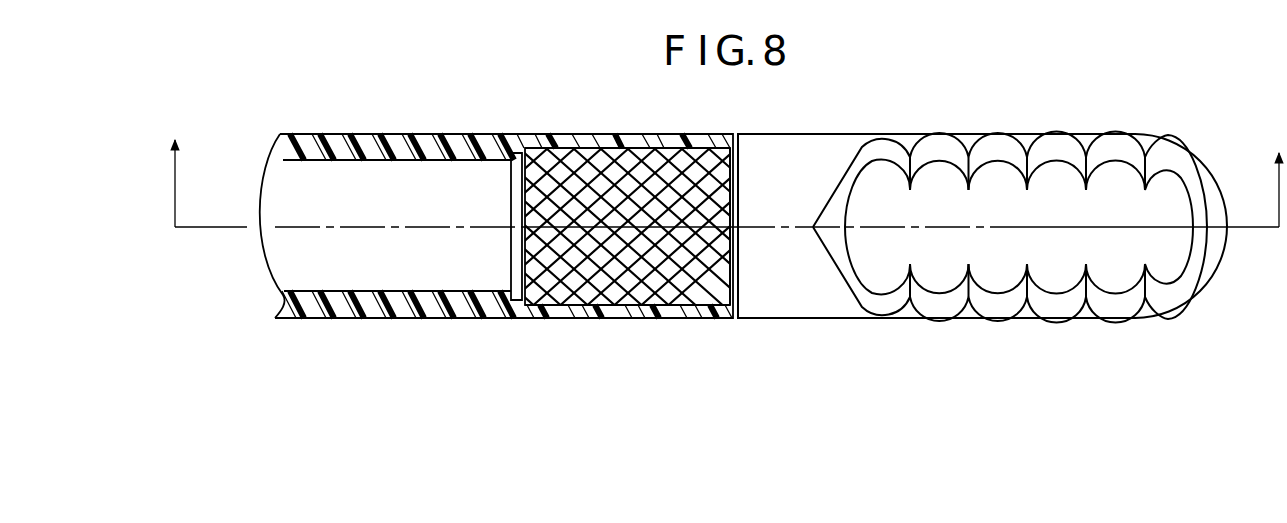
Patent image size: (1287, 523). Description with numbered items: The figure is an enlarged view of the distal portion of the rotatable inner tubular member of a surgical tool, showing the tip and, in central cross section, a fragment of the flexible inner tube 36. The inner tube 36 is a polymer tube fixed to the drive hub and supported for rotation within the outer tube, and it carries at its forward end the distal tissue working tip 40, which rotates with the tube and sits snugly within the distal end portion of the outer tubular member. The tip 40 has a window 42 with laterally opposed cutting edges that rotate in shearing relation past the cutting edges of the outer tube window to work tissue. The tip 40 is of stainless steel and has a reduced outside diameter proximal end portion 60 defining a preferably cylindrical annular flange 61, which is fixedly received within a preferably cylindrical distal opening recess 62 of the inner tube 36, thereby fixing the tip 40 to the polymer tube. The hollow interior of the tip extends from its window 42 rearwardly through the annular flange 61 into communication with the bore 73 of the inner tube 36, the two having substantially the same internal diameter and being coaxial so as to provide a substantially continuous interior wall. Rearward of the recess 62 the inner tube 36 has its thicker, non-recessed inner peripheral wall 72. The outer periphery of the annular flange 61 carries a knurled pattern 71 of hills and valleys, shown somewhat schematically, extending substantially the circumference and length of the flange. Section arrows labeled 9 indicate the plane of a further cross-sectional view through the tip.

The section line for FIG. 9 is at (708, 183).
The inner tube 36 is at (413, 128).
The distal tissue working tip 40 is at (791, 128).
The window 42 is at (990, 171).
The proximal end portion 60 is at (568, 322).
The annular flange 61 is at (625, 282).
The distal opening recess 62 is at (623, 158).
The knurled pattern 71 is at (680, 277).
The non-recessed inner peripheral wall 72 is at (377, 160).
The bore 73 is at (314, 260).